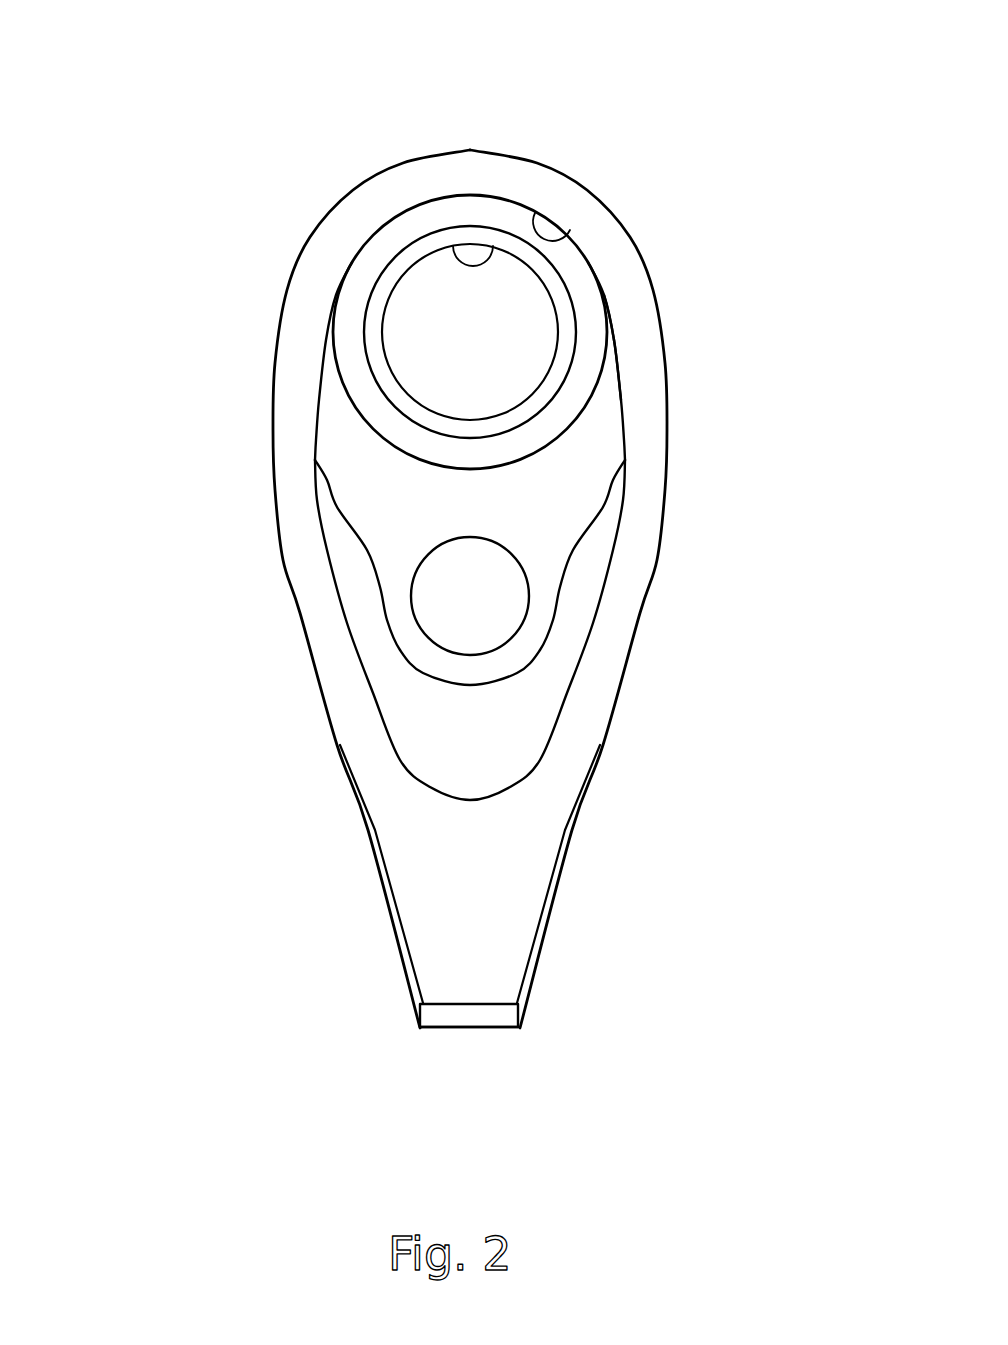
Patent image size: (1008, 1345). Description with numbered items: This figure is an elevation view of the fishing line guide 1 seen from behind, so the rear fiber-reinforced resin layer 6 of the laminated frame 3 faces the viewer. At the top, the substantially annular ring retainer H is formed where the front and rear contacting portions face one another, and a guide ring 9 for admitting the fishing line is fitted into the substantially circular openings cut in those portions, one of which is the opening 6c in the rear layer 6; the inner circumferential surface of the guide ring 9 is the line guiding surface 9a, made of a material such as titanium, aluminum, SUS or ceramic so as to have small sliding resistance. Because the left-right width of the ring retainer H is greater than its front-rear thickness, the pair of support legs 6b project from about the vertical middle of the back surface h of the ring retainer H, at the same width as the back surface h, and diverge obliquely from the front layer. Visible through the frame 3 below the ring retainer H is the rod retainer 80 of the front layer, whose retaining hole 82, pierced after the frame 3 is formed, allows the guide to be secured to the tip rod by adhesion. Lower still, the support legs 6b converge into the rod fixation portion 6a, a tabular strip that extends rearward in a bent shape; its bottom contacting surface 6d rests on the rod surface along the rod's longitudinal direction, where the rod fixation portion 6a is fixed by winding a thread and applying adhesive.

The line guide 1 is at (252, 190).
The frame 3 is at (687, 613).
The rear fiber-reinforced resin layer 6 is at (675, 450).
The rod fixation portion 6a is at (447, 1005).
The support legs 6b is at (358, 735).
The opening 6c is at (568, 228).
The contacting surface 6d is at (480, 1025).
The guide ring 9 is at (421, 217).
The line guiding surface 9a is at (493, 252).
The rod retainer 80 is at (380, 608).
The retaining hole 82 is at (463, 630).
The ring retainer H is at (612, 292).
The back surface h is at (637, 333).